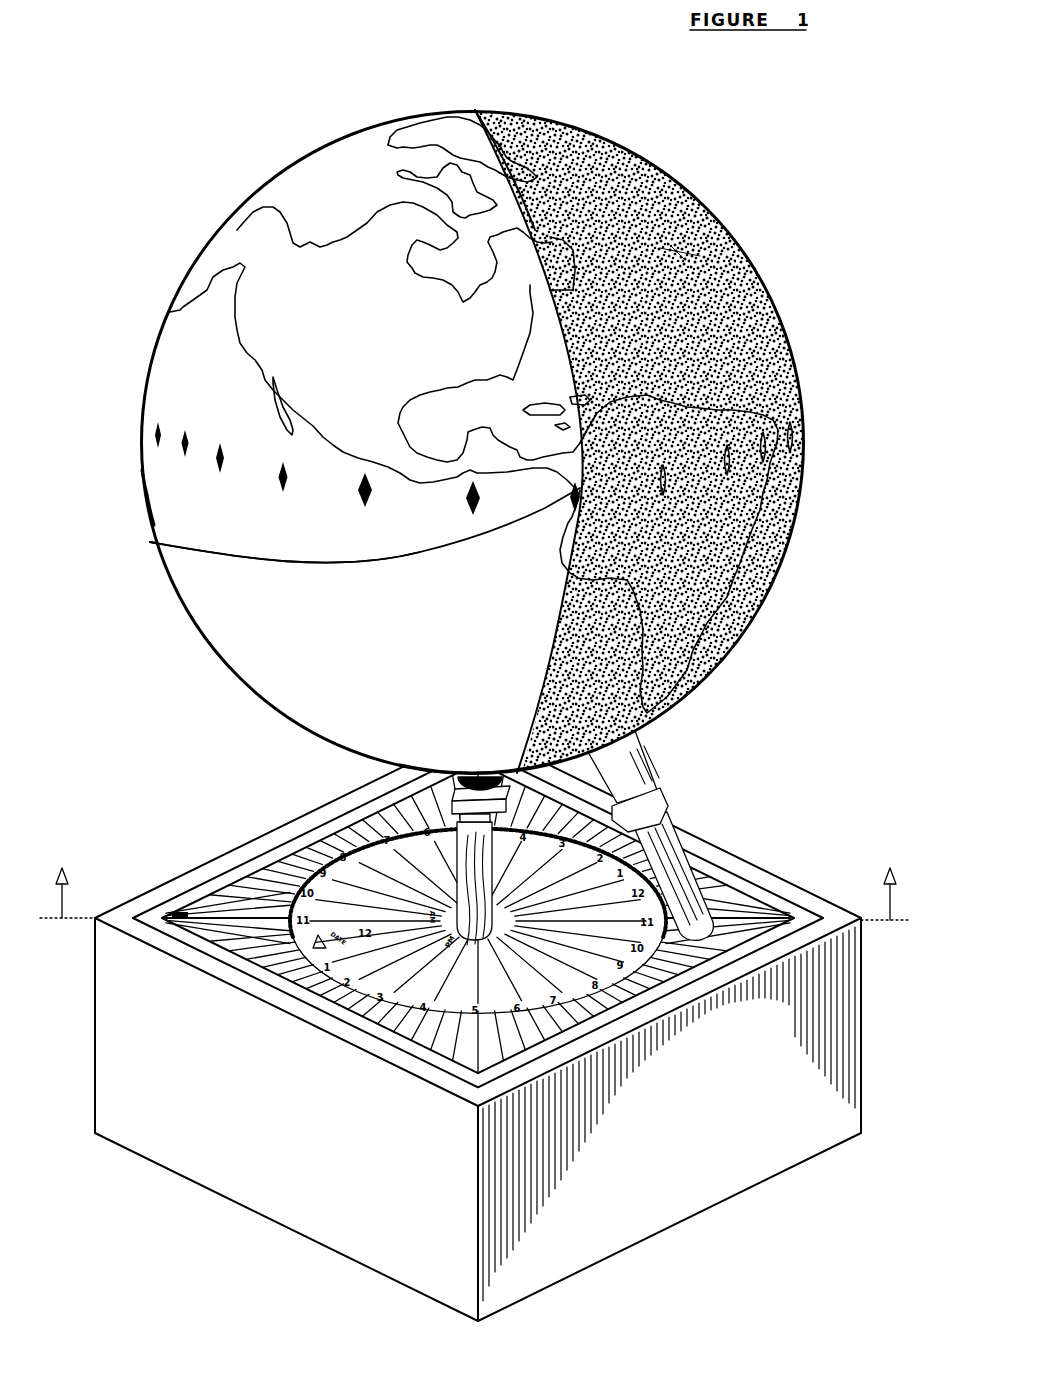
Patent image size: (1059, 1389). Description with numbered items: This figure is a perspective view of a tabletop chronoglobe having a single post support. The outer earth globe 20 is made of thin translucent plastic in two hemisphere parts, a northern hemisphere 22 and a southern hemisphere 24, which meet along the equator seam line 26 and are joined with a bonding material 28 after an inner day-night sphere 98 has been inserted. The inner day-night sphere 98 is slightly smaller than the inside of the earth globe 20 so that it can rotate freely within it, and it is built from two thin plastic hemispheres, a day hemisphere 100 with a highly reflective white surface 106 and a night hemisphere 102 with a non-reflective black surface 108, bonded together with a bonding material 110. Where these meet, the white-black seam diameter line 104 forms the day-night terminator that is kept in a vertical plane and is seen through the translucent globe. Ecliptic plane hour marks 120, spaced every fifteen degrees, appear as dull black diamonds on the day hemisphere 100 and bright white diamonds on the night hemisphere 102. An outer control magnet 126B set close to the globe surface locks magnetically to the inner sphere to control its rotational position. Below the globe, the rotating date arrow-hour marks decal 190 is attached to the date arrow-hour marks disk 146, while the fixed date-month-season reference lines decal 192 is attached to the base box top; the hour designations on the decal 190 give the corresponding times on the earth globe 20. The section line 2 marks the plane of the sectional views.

The outer earth globe 20 is at (580, 487).
The northern hemisphere 22 is at (317, 268).
The southern hemisphere 24 is at (683, 552).
The equator seam line 26 is at (260, 560).
The bonding material 28 is at (260, 560).
The inner day-night sphere 98 is at (493, 727).
The day hemisphere 100 is at (210, 512).
The night hemisphere 102 is at (680, 252).
The white-black seam diameter line 104 is at (523, 207).
The reflective white surface 106 is at (210, 512).
The non-reflective black surface 108 is at (677, 252).
The bonding material 110 is at (523, 207).
The ecliptic plane hour marks 120 is at (283, 461).
The outer control magnet 126B is at (460, 768).
The date arrow-hour marks disk 146 is at (237, 890).
The date arrow-hour marks decal 190 is at (340, 812).
The date-month-season reference lines decal 192 is at (230, 890).
The section line 2 is at (474, 883).